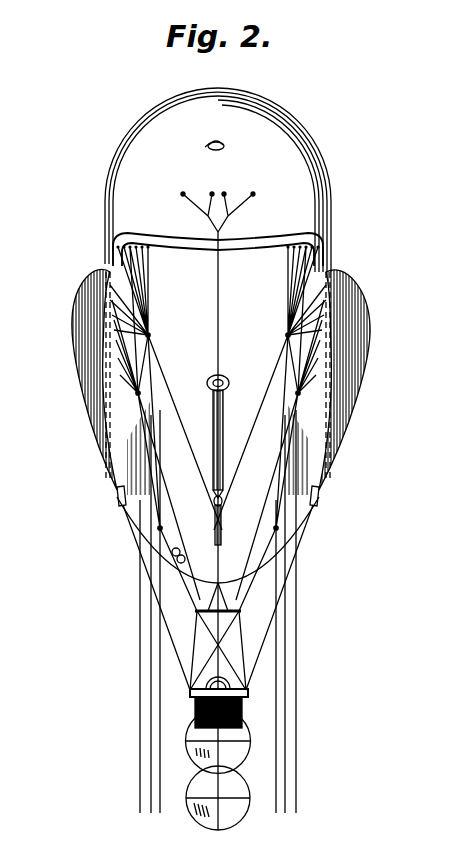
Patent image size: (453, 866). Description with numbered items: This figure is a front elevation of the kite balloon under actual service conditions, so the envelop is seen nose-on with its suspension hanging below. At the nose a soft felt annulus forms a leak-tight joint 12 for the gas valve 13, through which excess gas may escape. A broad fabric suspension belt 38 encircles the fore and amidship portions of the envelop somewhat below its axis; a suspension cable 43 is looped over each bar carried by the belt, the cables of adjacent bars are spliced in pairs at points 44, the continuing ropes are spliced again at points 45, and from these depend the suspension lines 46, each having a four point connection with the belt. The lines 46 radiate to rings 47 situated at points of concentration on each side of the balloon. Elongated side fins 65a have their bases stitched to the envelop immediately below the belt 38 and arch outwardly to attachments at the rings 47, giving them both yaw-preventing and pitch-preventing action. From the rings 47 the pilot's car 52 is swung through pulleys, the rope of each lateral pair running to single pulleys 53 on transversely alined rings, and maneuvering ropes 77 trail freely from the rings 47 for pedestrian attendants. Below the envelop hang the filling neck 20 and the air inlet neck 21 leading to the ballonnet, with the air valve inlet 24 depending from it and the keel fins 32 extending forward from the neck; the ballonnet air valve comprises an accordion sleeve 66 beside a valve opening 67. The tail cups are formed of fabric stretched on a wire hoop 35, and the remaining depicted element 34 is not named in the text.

The leak-tight joint 12 is at (219, 149).
The gas valve 13 is at (220, 141).
The filling neck 20 is at (224, 408).
The air inlet neck 21 is at (233, 647).
The air valve inlet 24 is at (240, 686).
The fins 32 is at (247, 583).
The float ball 34 is at (253, 752).
The wire hoop 35 is at (188, 748).
The suspension belt 38 is at (277, 244).
The suspension cable 43 is at (146, 252).
The splice points 44 is at (140, 275).
The splice points 45 is at (146, 290).
The suspension lines 46 is at (151, 331).
The rings 47 is at (152, 338).
The pilot's car 52 is at (196, 702).
The single pulleys 53 is at (241, 612).
The side fins 65a is at (387, 360).
The accordion sleeve 66 is at (172, 562).
The valve opening 67 is at (172, 550).
The maneuvering ropes 77 is at (220, 283).